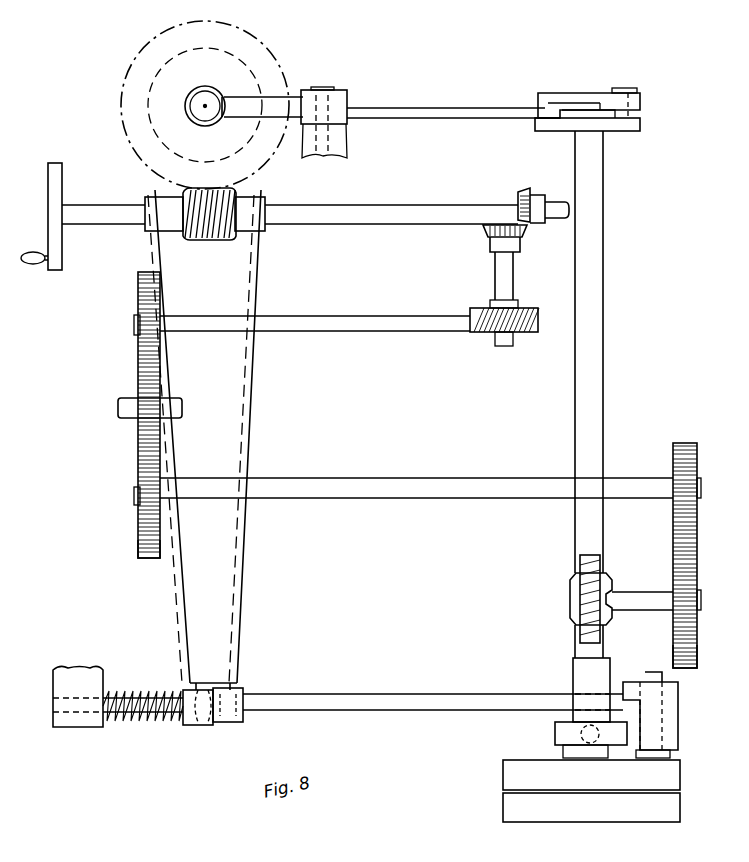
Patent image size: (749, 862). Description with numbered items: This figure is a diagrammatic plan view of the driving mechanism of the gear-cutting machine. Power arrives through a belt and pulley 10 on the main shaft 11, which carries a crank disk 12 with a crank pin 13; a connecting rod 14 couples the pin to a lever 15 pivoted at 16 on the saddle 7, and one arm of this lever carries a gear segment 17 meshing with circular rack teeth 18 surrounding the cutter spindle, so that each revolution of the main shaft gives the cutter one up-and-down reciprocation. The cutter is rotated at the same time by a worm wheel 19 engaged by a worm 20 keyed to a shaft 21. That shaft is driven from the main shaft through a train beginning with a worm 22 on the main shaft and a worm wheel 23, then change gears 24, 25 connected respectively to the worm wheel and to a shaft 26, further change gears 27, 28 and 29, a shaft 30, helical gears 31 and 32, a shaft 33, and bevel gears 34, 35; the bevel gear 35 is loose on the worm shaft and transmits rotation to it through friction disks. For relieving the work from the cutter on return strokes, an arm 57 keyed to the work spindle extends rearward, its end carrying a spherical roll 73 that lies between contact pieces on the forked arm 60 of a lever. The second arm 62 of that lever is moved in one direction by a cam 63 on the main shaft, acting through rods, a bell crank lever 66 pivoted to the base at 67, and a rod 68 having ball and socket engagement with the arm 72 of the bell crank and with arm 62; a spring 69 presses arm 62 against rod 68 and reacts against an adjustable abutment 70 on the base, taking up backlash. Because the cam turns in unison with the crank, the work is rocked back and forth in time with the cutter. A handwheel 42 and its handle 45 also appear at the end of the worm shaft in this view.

The saddle 7 is at (201, 115).
The belt and pulley 10 is at (510, 804).
The main shaft 11 is at (580, 520).
The crank disk 12 is at (618, 128).
The crank pin 13 is at (626, 88).
The connecting rod 14 is at (568, 93).
The lever 15 is at (386, 108).
The pivot 16 is at (324, 90).
The gear segment 17 is at (225, 97).
The circular rack teeth 18 is at (193, 92).
The worm wheel 19 is at (124, 108).
The worm 20 is at (205, 240).
The worm shaft 21 is at (340, 224).
The worm 22 is at (572, 598).
The worm wheel 23 is at (588, 632).
The change gear 24 is at (690, 648).
The change gear 25 is at (692, 460).
The shaft 26 is at (628, 480).
The change gear 27 is at (142, 543).
The change gear 28 is at (140, 412).
The change gear 29 is at (142, 341).
The shaft 30 is at (377, 332).
The helical gear 31 is at (491, 302).
The helical gear 32 is at (471, 333).
The shaft 33 is at (500, 262).
The bevel gear 34 is at (483, 230).
The bevel gear 35 is at (518, 190).
The handwheel 42 is at (48, 197).
The handle 45 is at (33, 262).
The arm 57 is at (248, 444).
The forked arm 60 is at (236, 724).
The second arm 62 is at (188, 725).
The cam 63 is at (565, 735).
The bell crank lever 66 is at (565, 752).
The pivot 67 is at (670, 754).
The rod 68 is at (428, 706).
The spring 69 is at (145, 714).
The adjustable abutment 70 is at (90, 727).
The arm 72 is at (655, 700).
The spherical roll 73 is at (200, 724).